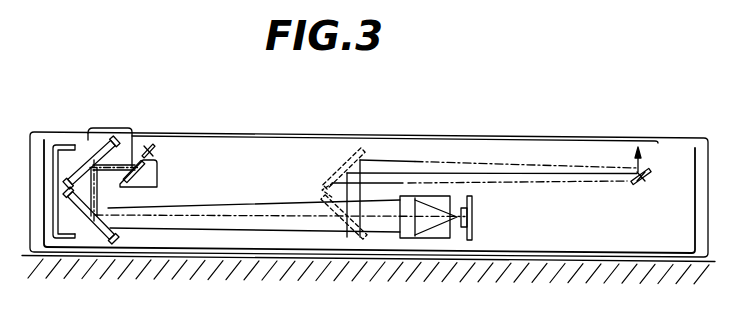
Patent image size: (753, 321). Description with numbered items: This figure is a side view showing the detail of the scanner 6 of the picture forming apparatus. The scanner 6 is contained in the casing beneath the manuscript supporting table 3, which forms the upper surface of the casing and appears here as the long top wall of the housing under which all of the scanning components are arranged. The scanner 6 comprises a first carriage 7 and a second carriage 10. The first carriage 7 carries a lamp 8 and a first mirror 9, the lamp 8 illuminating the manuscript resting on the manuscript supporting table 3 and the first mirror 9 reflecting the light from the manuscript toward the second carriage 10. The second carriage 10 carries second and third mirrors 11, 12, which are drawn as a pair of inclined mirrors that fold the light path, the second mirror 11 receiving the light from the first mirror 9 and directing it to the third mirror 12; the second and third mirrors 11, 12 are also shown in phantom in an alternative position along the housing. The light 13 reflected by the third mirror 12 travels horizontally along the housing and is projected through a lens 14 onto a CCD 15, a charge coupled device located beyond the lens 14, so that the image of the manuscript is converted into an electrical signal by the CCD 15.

The manuscript supporting table 3 is at (511, 135).
The scanner 6 is at (240, 162).
The first carriage 7 is at (158, 170).
The lamp 8 is at (148, 150).
The first mirror 9 is at (158, 178).
The second carriage 10 is at (63, 238).
The second mirror 11 is at (93, 162).
The third mirror 12 is at (97, 232).
The light 13 is at (266, 237).
The lens 14 is at (437, 239).
The CCD 15 is at (473, 221).